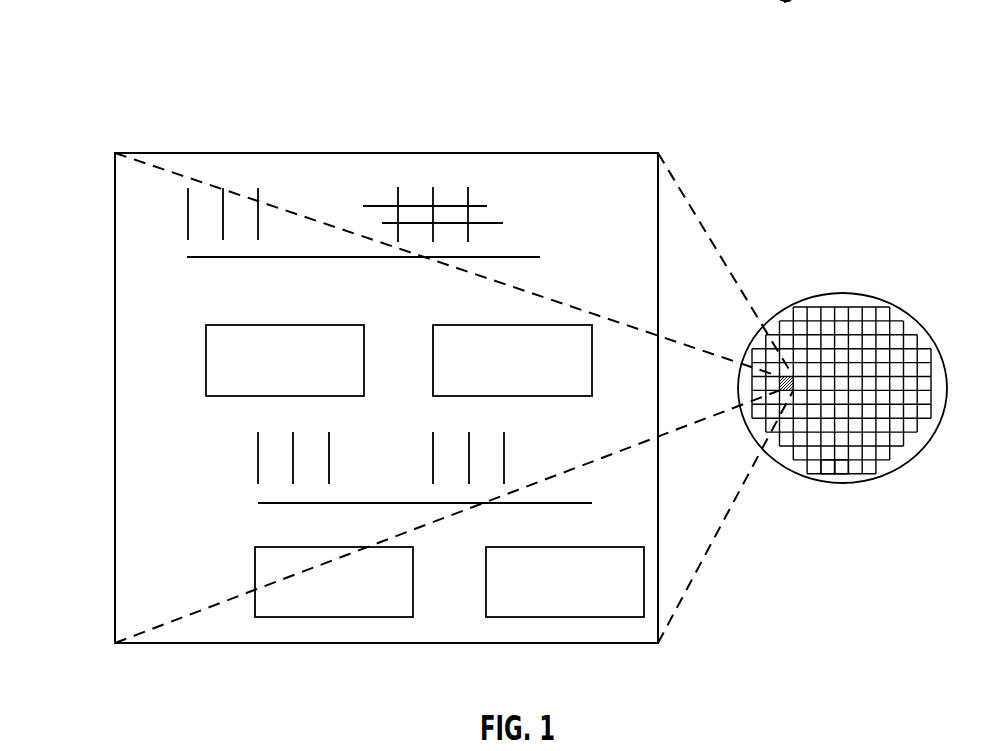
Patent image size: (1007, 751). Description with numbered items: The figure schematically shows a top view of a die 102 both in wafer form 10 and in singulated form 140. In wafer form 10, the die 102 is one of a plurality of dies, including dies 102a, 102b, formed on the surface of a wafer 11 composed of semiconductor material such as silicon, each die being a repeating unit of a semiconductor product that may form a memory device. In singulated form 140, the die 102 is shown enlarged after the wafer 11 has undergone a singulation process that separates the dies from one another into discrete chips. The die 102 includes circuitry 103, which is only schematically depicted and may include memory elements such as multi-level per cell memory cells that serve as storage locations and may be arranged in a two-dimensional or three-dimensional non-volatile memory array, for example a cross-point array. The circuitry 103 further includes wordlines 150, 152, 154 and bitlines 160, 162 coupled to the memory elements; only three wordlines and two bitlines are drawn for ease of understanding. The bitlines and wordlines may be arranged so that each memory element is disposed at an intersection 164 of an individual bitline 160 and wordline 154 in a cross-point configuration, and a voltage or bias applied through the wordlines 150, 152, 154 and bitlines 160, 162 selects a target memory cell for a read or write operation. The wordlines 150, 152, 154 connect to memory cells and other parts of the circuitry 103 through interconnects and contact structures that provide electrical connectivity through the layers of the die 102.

The wafer form 10 is at (852, 278).
The wafer 11 is at (866, 296).
The die 102 is at (183, 643).
The die 102a is at (828, 474).
The die 102b is at (838, 474).
The circuitry 103 is at (258, 502).
The singulated form 140 is at (642, 115).
The wordline 150 is at (398, 187).
The wordline 152 is at (433, 187).
The wordline 154 is at (468, 187).
The bitline 160 is at (487, 206).
The bitline 162 is at (503, 223).
The intersection 164 is at (468, 206).